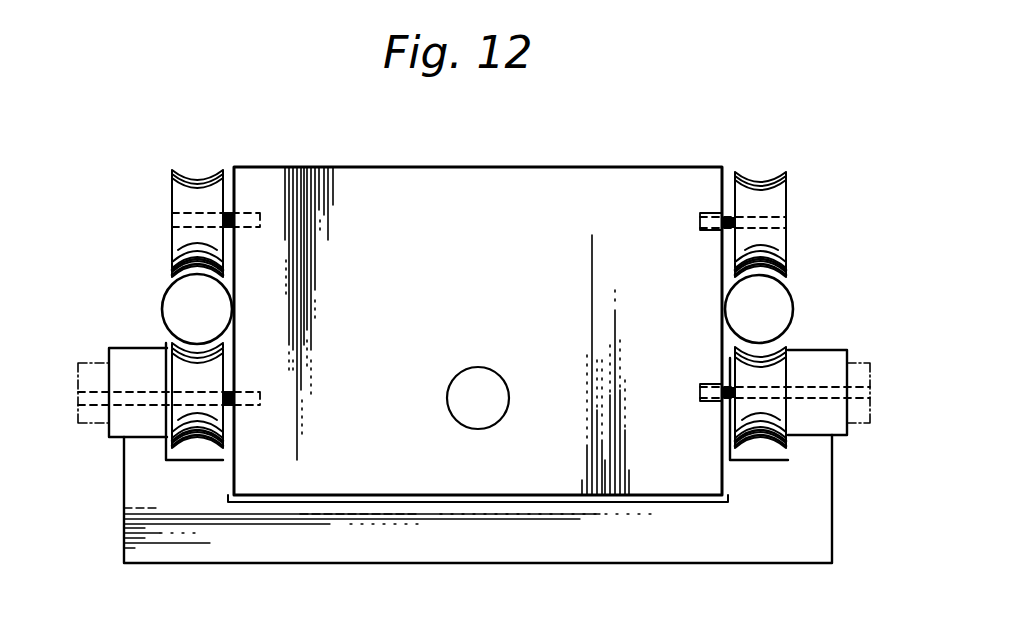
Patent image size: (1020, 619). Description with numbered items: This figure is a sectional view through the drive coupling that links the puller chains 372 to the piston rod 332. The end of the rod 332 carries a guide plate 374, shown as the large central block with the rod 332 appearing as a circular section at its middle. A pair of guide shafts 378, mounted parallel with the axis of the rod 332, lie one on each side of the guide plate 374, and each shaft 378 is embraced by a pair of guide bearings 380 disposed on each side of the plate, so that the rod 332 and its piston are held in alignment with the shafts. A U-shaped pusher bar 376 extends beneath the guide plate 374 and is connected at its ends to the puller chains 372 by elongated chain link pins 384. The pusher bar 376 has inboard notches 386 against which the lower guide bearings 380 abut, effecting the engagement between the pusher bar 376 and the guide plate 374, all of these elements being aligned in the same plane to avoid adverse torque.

The piston rod 332 is at (488, 337).
The puller chains 372 is at (96, 322).
The guide plate 374 is at (404, 185).
The pusher bar 376 is at (447, 545).
The guide shafts 378 is at (162, 290).
The guide bearings 380 is at (172, 185).
The chain link pins 384 is at (865, 392).
The inboard notches 386 is at (182, 454).